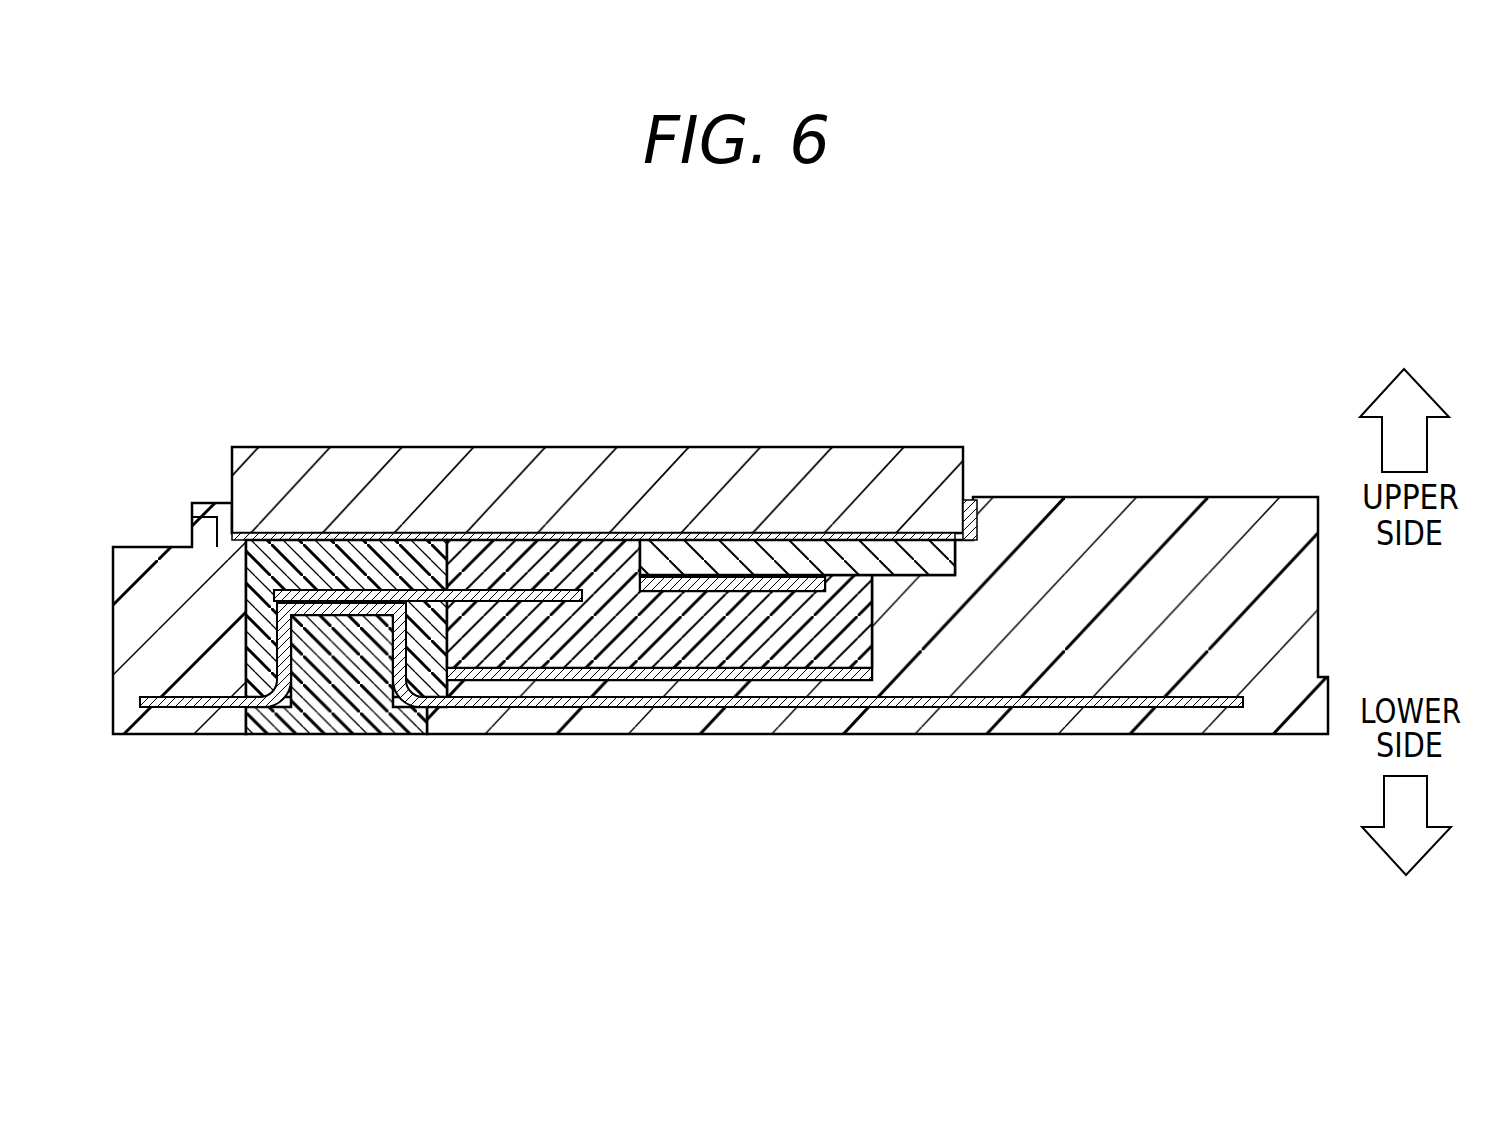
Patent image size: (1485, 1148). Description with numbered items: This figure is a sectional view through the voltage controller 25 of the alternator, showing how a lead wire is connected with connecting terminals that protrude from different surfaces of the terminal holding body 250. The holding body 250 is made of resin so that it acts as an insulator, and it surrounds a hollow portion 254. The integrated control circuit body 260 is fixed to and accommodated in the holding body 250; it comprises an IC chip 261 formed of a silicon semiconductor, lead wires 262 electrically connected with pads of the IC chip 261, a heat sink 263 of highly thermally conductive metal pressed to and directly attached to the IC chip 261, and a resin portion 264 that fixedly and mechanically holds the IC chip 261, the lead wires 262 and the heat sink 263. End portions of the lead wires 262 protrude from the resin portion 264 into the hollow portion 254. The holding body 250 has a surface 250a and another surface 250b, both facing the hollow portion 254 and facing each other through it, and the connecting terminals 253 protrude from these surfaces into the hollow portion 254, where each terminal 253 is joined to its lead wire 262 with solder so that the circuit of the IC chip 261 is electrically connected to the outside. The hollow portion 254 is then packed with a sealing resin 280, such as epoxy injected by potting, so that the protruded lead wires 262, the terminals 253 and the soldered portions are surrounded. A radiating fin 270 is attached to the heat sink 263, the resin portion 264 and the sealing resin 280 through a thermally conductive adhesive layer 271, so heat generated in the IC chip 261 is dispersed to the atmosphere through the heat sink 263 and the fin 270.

The controller 25 is at (716, 534).
The terminal holding body 250 is at (716, 610).
The surface of the body 250a is at (428, 728).
The another surface of the body 250b is at (245, 606).
The connecting terminal 253 is at (190, 710).
The hollow portion 254 is at (345, 750).
The integrated control circuit body 260 is at (617, 570).
The IC chip 261 is at (657, 577).
The lead wire 262 is at (547, 590).
The heat sink 263 is at (750, 555).
The resin portion 264 is at (647, 623).
The radiating fin 270 is at (862, 460).
The adhesive layer 271 is at (975, 497).
The sealing resin 280 is at (355, 580).